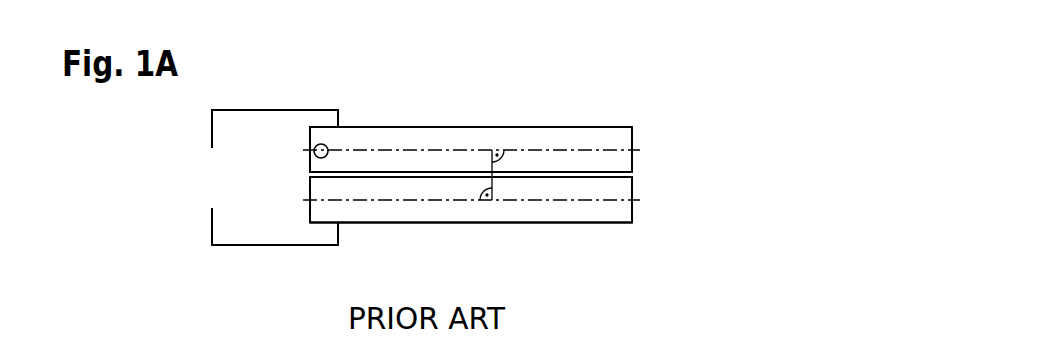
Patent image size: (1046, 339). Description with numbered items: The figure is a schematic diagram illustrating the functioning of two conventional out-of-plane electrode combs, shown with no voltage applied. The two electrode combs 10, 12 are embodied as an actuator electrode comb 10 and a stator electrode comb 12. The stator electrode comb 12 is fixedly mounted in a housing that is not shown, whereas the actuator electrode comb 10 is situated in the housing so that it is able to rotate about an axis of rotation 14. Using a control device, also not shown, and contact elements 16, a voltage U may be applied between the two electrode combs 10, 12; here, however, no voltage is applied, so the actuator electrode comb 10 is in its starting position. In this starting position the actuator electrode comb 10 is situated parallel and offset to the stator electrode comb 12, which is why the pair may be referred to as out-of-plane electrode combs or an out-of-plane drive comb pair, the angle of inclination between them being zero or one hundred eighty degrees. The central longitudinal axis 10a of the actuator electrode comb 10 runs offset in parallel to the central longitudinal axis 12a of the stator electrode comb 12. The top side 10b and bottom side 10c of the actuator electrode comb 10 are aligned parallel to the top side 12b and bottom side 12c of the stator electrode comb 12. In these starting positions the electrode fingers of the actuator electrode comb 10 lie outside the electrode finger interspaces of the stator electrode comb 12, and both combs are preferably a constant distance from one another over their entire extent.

The actuator electrode comb 10 is at (562, 138).
The central longitudinal axis of actuator electrode comb 10a is at (520, 150).
The top side of actuator electrode comb 10b is at (608, 126).
The bottom side of actuator electrode comb 10c is at (622, 176).
The stator electrode comb 12 is at (562, 208).
The central longitudinal axis of stator electrode comb 12a is at (520, 202).
The top side of stator electrode comb 12b is at (600, 174).
The bottom side of stator electrode comb 12c is at (622, 222).
The axis of rotation 14 is at (325, 146).
The contact elements 16 is at (290, 110).